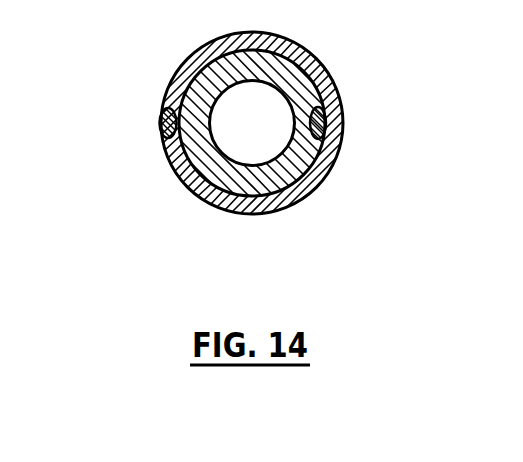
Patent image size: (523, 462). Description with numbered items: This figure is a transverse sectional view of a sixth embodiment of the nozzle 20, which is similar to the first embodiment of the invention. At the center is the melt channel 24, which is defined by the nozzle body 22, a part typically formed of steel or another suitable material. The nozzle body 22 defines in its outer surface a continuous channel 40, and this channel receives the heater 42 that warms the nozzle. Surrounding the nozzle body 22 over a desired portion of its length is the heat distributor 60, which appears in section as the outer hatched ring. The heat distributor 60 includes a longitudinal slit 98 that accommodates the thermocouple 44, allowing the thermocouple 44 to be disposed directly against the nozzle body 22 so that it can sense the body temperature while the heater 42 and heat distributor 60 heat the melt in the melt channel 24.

The nozzle 20 is at (237, 137).
The nozzle body 22 is at (233, 177).
The melt channel 24 is at (228, 133).
The continuous channel 40 is at (343, 109).
The heater 42 is at (345, 110).
The thermocouple 44 is at (160, 112).
The heat distributor 60 is at (320, 63).
The longitudinal slit 98 is at (163, 122).